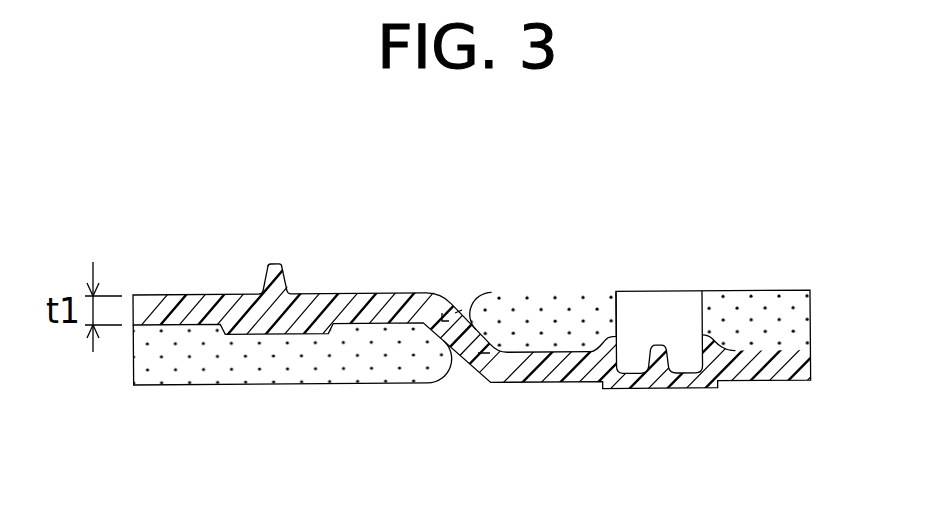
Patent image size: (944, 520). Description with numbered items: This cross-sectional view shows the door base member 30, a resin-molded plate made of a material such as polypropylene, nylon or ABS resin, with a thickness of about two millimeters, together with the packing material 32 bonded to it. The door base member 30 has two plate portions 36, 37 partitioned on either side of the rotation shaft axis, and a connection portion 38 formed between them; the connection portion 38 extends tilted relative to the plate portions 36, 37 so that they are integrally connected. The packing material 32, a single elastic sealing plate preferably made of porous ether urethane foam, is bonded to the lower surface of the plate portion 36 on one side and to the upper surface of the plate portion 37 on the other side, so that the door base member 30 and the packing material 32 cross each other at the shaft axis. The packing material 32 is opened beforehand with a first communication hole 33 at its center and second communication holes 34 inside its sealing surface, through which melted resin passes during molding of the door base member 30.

The door base member 30 is at (178, 295).
The packing material 32 is at (572, 291).
The first communication hole 33 is at (449, 306).
The second communication hole 34 is at (663, 302).
The plate portion 36 is at (322, 305).
The plate portion 37 is at (573, 373).
The connection portion 38 is at (471, 345).